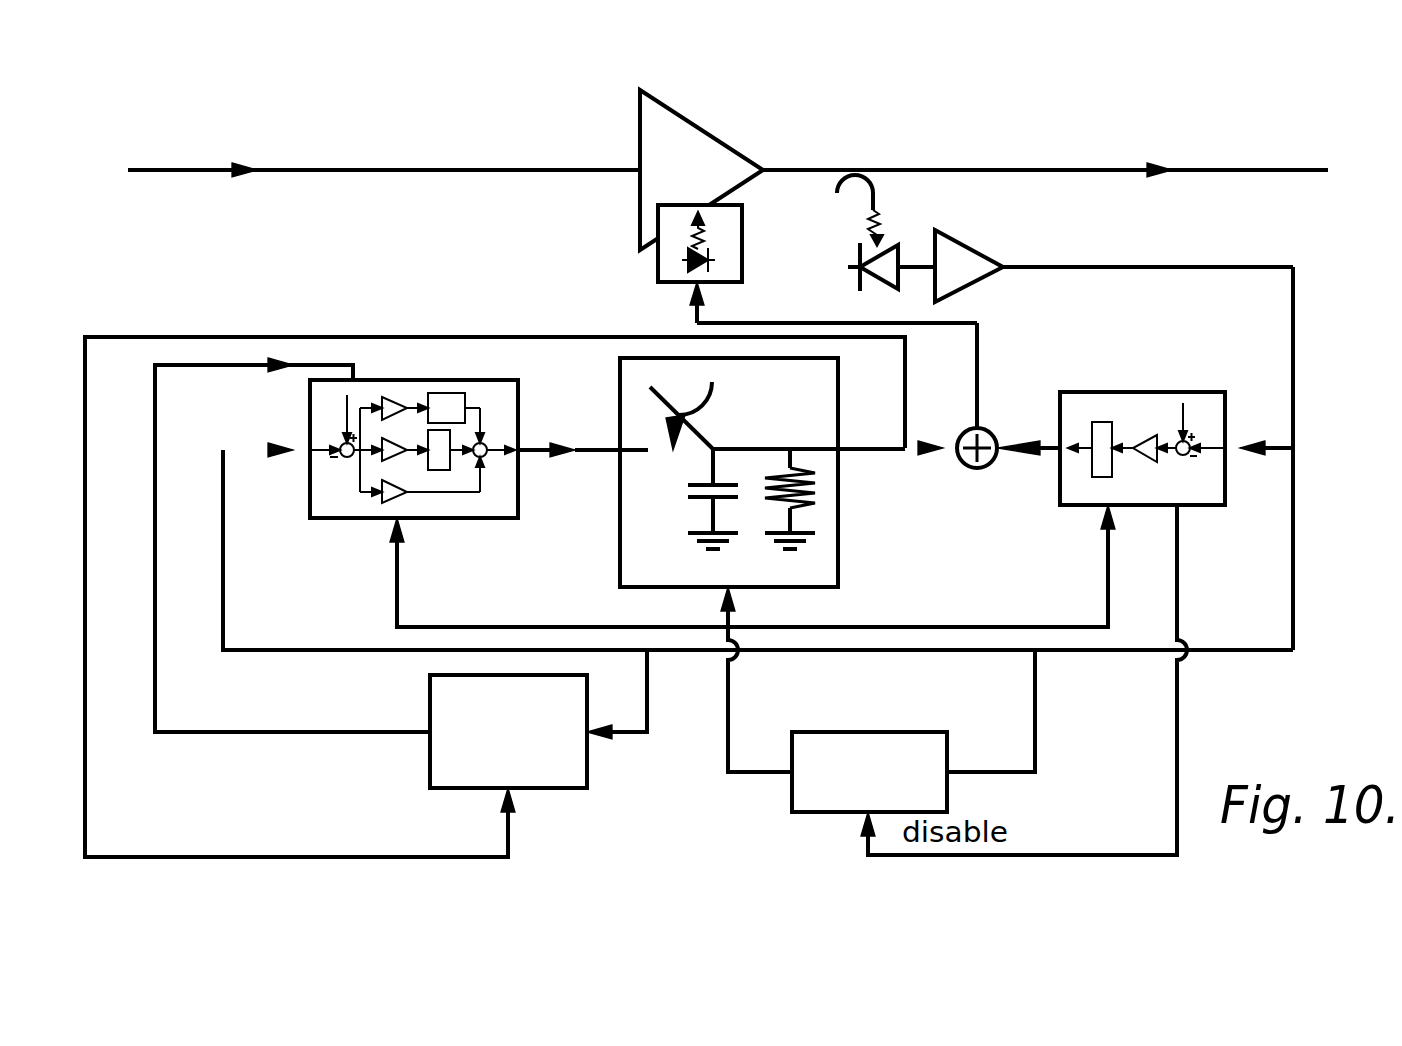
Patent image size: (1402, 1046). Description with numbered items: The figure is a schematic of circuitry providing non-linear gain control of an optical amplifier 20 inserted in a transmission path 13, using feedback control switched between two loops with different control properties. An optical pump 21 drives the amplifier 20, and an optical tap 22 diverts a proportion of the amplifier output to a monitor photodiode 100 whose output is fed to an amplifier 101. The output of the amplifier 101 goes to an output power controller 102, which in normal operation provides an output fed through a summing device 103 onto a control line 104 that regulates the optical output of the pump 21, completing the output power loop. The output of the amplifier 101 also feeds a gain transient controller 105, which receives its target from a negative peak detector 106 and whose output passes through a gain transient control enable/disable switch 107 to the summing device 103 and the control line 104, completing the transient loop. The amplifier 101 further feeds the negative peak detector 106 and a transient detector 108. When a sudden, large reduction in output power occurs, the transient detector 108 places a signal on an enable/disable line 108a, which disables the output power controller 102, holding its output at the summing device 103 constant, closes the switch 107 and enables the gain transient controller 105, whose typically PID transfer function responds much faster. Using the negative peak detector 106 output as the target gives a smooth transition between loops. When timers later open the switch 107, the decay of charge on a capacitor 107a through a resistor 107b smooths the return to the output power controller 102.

The transmission path 13 is at (400, 170).
The optical amplifier 20 is at (693, 158).
The optical pump 21 is at (727, 233).
The optical tap 22 is at (860, 185).
The monitor photodiode 100 is at (885, 270).
The amplifier 101 is at (982, 253).
The output power controller 102 is at (1165, 408).
The summing device 103 is at (965, 467).
The control line 104 is at (982, 377).
The gain transient controller 105 is at (505, 403).
The negative peak detector 106 is at (445, 717).
The gain transient control enable/disable switch 107 is at (767, 489).
The capacitor 107a is at (690, 495).
The resistor 107b is at (815, 497).
The transient detector 108 is at (910, 740).
The enable/disable line 108a is at (725, 745).